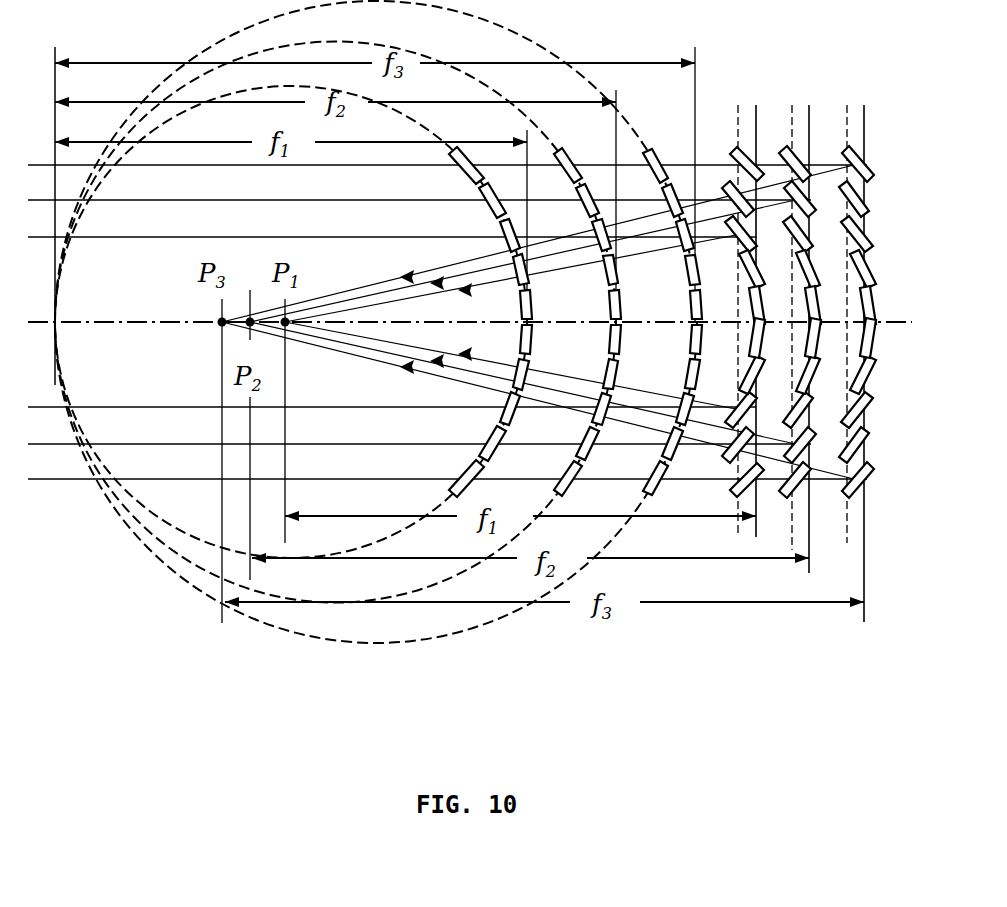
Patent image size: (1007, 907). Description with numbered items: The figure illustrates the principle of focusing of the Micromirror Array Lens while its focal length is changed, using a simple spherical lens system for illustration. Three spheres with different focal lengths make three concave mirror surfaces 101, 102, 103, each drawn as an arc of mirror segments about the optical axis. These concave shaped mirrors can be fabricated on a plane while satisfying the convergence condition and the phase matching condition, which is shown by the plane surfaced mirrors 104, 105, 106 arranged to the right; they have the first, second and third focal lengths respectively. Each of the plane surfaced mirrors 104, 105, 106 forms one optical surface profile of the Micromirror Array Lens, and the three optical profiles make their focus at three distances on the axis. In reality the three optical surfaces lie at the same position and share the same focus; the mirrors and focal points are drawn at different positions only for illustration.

The concave mirror surface 101 is at (472, 492).
The concave mirror surface 102 is at (553, 490).
The concave mirror surface 103 is at (660, 490).
The plane surfaced mirror 104 is at (743, 533).
The plane surfaced mirror 105 is at (801, 520).
The plane surfaced mirror 106 is at (863, 500).